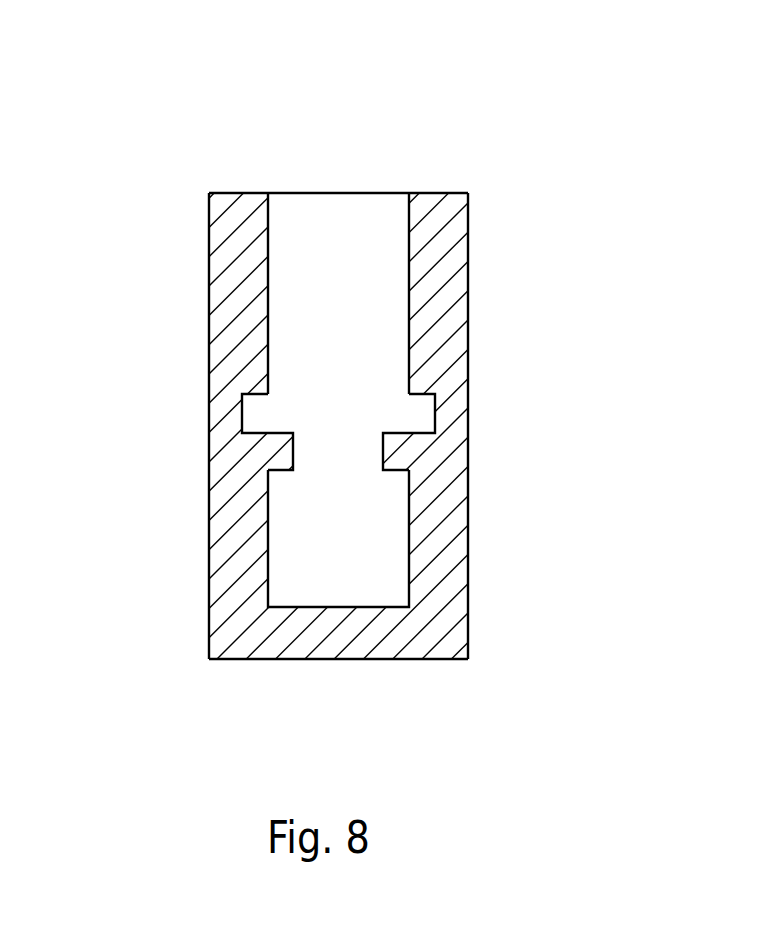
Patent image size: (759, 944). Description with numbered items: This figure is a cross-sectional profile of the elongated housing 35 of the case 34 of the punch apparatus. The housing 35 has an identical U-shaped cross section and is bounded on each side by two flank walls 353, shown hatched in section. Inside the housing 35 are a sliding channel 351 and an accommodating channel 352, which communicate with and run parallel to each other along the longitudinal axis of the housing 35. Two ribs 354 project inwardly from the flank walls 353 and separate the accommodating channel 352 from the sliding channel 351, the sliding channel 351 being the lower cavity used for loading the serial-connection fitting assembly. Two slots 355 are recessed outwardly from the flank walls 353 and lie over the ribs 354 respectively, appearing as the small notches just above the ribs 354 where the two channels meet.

The case 34 is at (522, 154).
The elongated housing 35 is at (210, 607).
The sliding channel 351 is at (380, 510).
The accommodating channel 352 is at (382, 296).
The flank walls 353 is at (240, 317).
The ribs 354 is at (292, 452).
The slots 355 is at (257, 413).